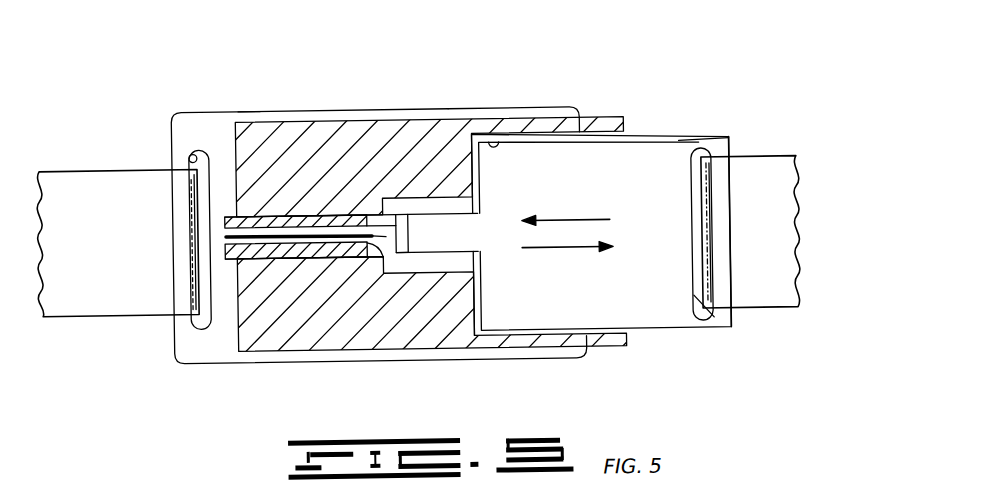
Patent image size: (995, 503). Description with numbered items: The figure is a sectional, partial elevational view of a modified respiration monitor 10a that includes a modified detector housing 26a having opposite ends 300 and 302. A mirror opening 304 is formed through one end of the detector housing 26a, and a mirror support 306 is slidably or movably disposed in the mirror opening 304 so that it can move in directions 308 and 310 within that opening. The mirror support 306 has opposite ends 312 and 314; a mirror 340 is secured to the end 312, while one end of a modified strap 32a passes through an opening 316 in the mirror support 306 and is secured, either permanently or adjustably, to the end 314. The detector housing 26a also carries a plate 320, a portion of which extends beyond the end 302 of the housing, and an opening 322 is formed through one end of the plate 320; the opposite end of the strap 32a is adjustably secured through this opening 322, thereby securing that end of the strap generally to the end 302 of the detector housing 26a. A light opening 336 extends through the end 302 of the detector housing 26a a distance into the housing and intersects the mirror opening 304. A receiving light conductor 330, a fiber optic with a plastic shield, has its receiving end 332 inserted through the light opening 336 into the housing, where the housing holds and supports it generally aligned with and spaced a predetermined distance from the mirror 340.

The modified respiration monitor 10a is at (494, 80).
The modified detector housing 26a is at (537, 100).
The end of detector housing 300 is at (628, 128).
The end of detector housing 302 is at (233, 133).
The mirror opening 304 is at (493, 138).
The mirror support 306 is at (683, 138).
The direction 308 is at (555, 220).
The direction 310 is at (558, 244).
The end of mirror support 312 is at (423, 394).
The end of mirror support 314 is at (728, 138).
The opening 316 is at (703, 312).
The plate 320 is at (245, 110).
The opening 322 is at (193, 147).
The modified strap 32a is at (768, 168).
The receiving light conductor 330 is at (258, 255).
The receiving end 332 is at (443, 261).
The light opening 336 is at (376, 253).
The mirror 340 is at (410, 233).